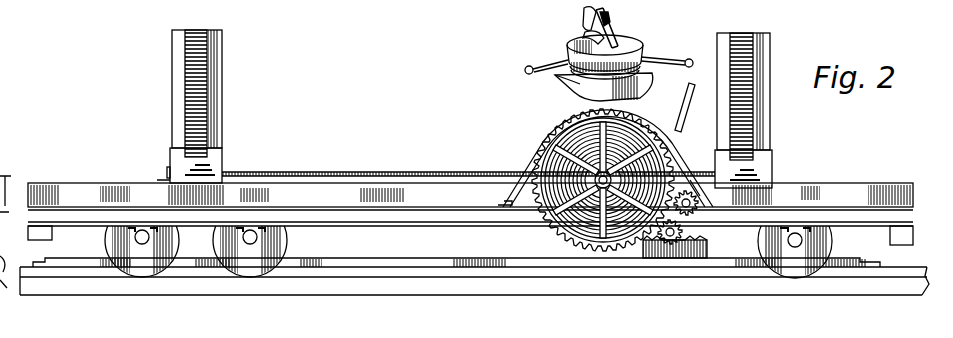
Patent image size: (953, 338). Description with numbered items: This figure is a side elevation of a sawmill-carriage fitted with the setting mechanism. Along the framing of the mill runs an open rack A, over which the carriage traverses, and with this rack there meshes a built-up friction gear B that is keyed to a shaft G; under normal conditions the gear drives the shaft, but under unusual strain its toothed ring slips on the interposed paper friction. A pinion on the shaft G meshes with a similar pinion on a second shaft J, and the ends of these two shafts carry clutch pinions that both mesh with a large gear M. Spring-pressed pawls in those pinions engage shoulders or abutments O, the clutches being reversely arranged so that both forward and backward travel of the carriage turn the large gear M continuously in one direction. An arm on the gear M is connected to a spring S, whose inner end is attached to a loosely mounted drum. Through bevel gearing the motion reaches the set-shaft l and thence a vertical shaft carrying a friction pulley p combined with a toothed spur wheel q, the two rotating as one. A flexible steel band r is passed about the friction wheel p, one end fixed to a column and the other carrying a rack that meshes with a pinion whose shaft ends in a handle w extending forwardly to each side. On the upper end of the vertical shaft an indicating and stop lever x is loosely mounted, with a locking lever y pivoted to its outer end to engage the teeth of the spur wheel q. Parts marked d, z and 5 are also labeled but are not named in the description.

The rack A is at (847, 265).
The gear B is at (704, 240).
The shaft G is at (676, 231).
The shaft J is at (698, 174).
The large gear M is at (546, 128).
The shoulders or abutments O is at (647, 143).
The spring S is at (534, 196).
The set-shaft l is at (408, 172).
The rod d is at (692, 110).
The flexible steel band or strap r is at (575, 80).
The cup z is at (630, 43).
The toothed or spurred wheel q is at (575, 50).
The crank lever 5 is at (611, 17).
The locking lever or handle y is at (583, 12).
The indicating and stop lever x is at (584, 31).
The handle w is at (523, 72).
The friction pulley or wheel p is at (652, 58).